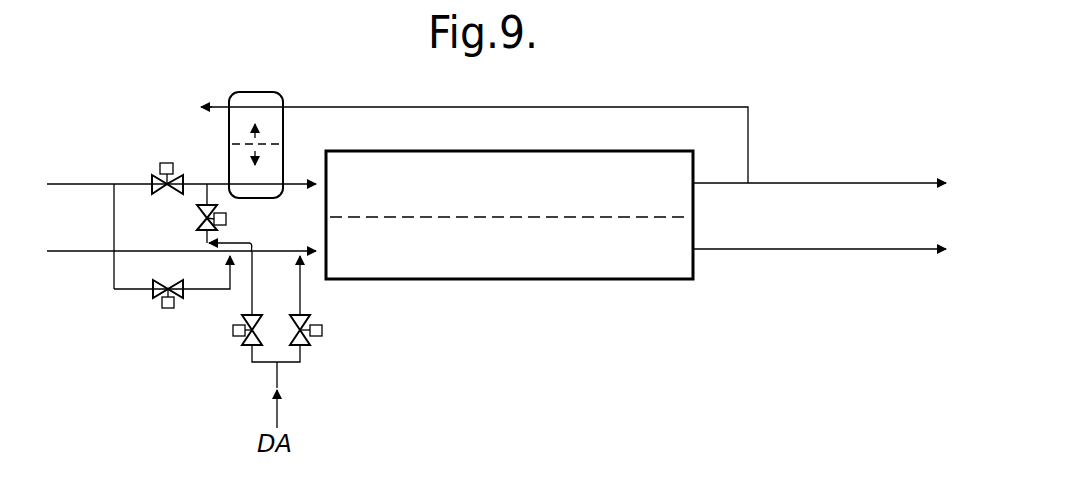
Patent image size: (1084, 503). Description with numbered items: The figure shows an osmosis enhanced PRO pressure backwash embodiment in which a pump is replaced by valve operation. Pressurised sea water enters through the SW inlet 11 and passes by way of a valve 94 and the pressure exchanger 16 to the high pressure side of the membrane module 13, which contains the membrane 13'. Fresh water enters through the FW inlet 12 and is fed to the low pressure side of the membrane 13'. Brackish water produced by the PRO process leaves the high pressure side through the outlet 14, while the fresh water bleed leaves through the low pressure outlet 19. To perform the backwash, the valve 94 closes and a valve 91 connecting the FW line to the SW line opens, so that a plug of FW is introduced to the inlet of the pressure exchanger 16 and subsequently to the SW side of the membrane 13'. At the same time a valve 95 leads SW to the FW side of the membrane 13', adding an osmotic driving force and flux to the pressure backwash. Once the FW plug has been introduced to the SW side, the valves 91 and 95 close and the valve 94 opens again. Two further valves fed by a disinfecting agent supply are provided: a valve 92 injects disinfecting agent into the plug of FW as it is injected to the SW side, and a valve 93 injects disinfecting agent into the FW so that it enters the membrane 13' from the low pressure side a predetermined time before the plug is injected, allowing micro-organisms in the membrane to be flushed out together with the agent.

The SW inlet 11 is at (104, 188).
The FW inlet 12 is at (103, 258).
The membrane module 13 is at (509, 199).
The membrane 13' is at (509, 278).
The outlet 14 is at (725, 184).
The pressure exchanger 16 is at (283, 126).
The low pressure outlet 19 is at (729, 250).
The valve 91 is at (196, 226).
The valve 92 is at (245, 340).
The valve 93 is at (310, 342).
The valve 94 is at (152, 183).
The valve 95 is at (155, 295).